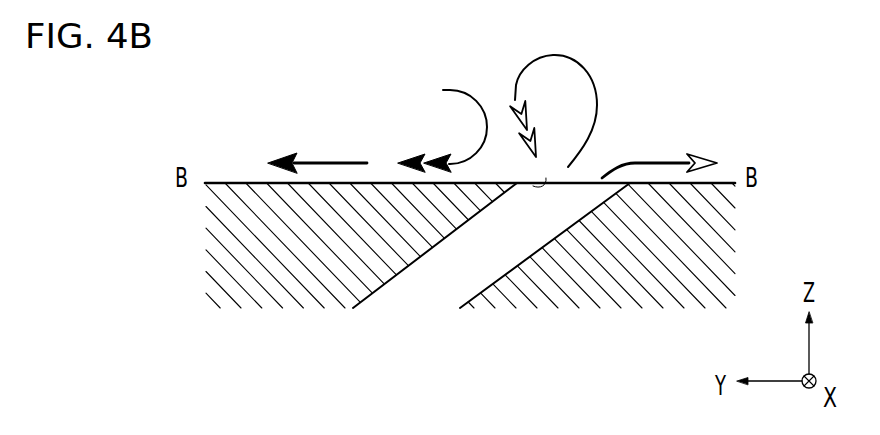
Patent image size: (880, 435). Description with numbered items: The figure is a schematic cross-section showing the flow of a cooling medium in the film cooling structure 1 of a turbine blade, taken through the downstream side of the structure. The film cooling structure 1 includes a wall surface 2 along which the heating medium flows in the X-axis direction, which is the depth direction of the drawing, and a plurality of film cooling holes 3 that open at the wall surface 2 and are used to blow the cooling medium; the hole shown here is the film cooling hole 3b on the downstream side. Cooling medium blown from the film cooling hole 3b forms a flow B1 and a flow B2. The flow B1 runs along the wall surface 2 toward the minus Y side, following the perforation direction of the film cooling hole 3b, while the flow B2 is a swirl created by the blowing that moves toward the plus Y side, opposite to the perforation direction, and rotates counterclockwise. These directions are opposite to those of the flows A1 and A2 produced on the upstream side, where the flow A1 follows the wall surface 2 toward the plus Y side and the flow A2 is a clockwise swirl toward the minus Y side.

The film cooling structure 1 is at (280, 126).
The wall surface 2 is at (720, 180).
The film cooling hole 3 is at (546, 178).
The film cooling hole on the downstream side 3b is at (512, 105).
The flow A1 is at (320, 160).
The flow A2 is at (445, 89).
The flow B1 is at (658, 161).
The flow B2 is at (580, 65).